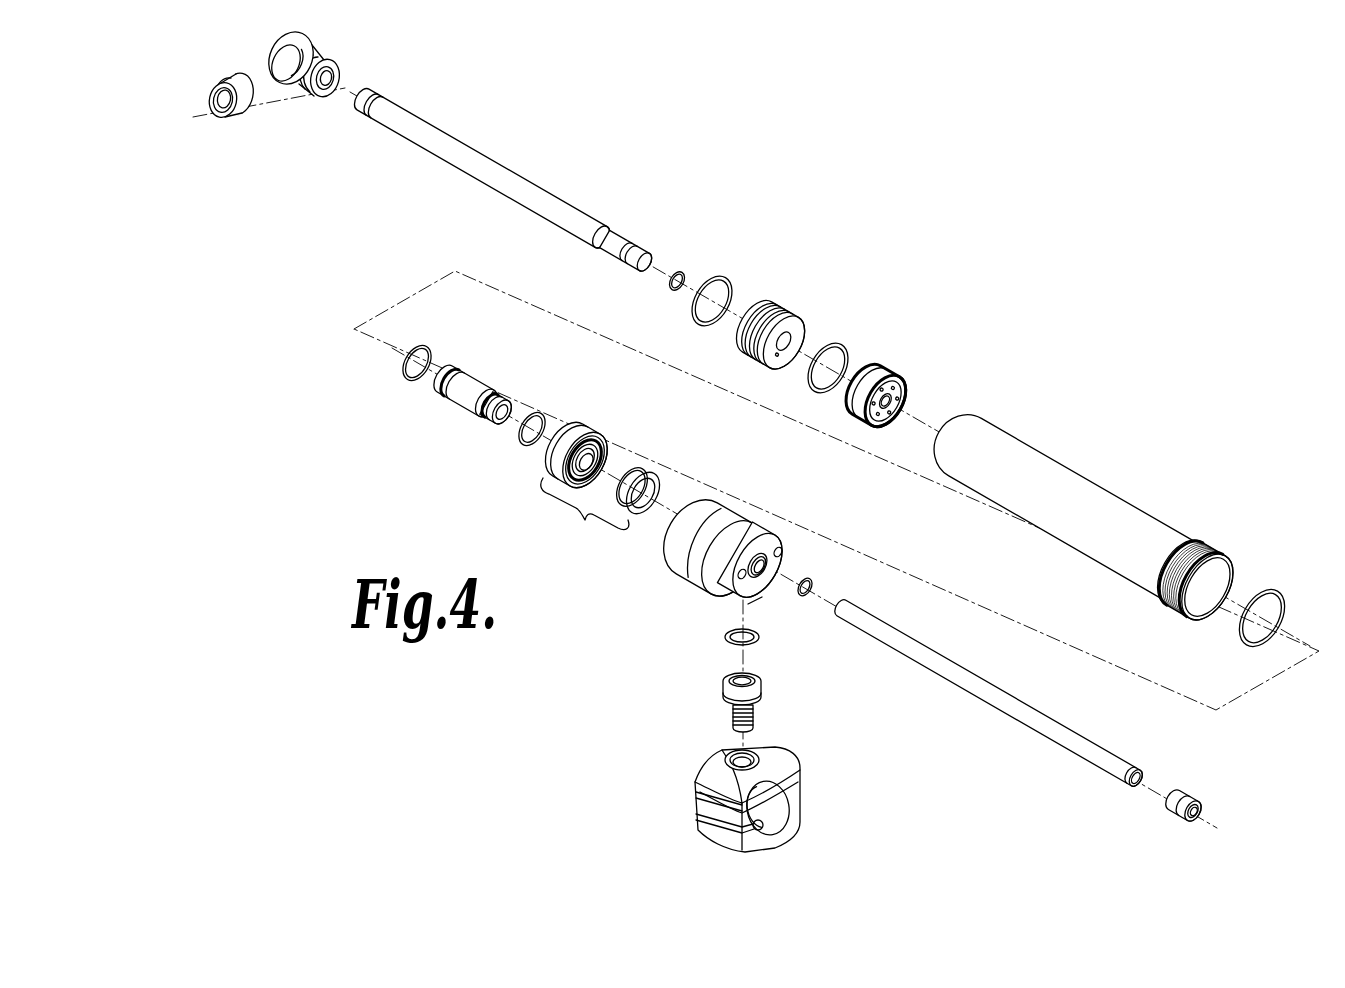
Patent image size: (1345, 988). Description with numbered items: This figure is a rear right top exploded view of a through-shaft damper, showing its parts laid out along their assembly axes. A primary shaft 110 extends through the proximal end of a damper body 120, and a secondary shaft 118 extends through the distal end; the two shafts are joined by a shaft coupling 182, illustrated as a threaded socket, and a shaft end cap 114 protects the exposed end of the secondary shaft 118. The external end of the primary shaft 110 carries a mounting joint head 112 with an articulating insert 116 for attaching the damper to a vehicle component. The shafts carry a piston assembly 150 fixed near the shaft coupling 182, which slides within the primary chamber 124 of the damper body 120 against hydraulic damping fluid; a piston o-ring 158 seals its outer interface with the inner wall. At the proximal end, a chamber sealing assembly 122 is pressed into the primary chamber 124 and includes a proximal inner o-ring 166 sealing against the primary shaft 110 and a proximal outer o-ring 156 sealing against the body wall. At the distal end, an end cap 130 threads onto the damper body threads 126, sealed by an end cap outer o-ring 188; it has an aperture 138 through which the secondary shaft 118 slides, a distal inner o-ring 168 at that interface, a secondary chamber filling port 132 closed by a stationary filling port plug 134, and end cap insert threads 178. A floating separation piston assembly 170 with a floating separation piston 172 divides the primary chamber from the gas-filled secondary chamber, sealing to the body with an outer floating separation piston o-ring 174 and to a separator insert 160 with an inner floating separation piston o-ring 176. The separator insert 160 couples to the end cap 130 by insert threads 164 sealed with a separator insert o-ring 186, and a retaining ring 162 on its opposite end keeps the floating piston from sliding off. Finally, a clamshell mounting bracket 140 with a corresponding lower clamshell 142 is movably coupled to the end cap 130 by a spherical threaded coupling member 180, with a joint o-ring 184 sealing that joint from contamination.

The primary shaft 110 is at (510, 178).
The mounting joint head 112 is at (322, 54).
The shaft end cap 114 is at (1188, 800).
The articulating insert 116 is at (214, 87).
The secondary shaft 118 is at (1010, 699).
The damper body 120 is at (1108, 492).
The chamber sealing assembly 122 is at (791, 309).
The primary chamber 124 is at (1217, 577).
The damper body threads 126 is at (1208, 543).
The end cap 130 is at (682, 553).
The secondary chamber filling port 132 is at (782, 549).
The filling port plug 134 is at (725, 596).
The aperture 138 is at (760, 525).
The clamshell mounting bracket 140 is at (700, 780).
The lower clamshell 142 is at (690, 814).
The piston assembly 150 is at (897, 372).
The proximal outer o-ring 156 is at (731, 277).
The piston o-ring 158 is at (842, 344).
The separator insert 160 is at (468, 373).
The retaining ring 162 is at (421, 351).
The insert threads 164 is at (503, 395).
The proximal inner o-ring 166 is at (681, 265).
The distal inner o-ring 168 is at (813, 581).
The floating separation piston assembly 170 is at (585, 509).
The floating separation piston 172 is at (590, 431).
The outer floating separation piston o-ring 174 is at (656, 483).
The inner floating separation piston o-ring 176 is at (636, 465).
The end cap insert threads 178 is at (760, 598).
The threaded coupling member 180 is at (730, 710).
The shaft coupling 182 is at (622, 244).
The joint o-ring 184 is at (761, 636).
The separator insert o-ring 186 is at (543, 416).
The end cap outer o-ring 188 is at (1288, 599).